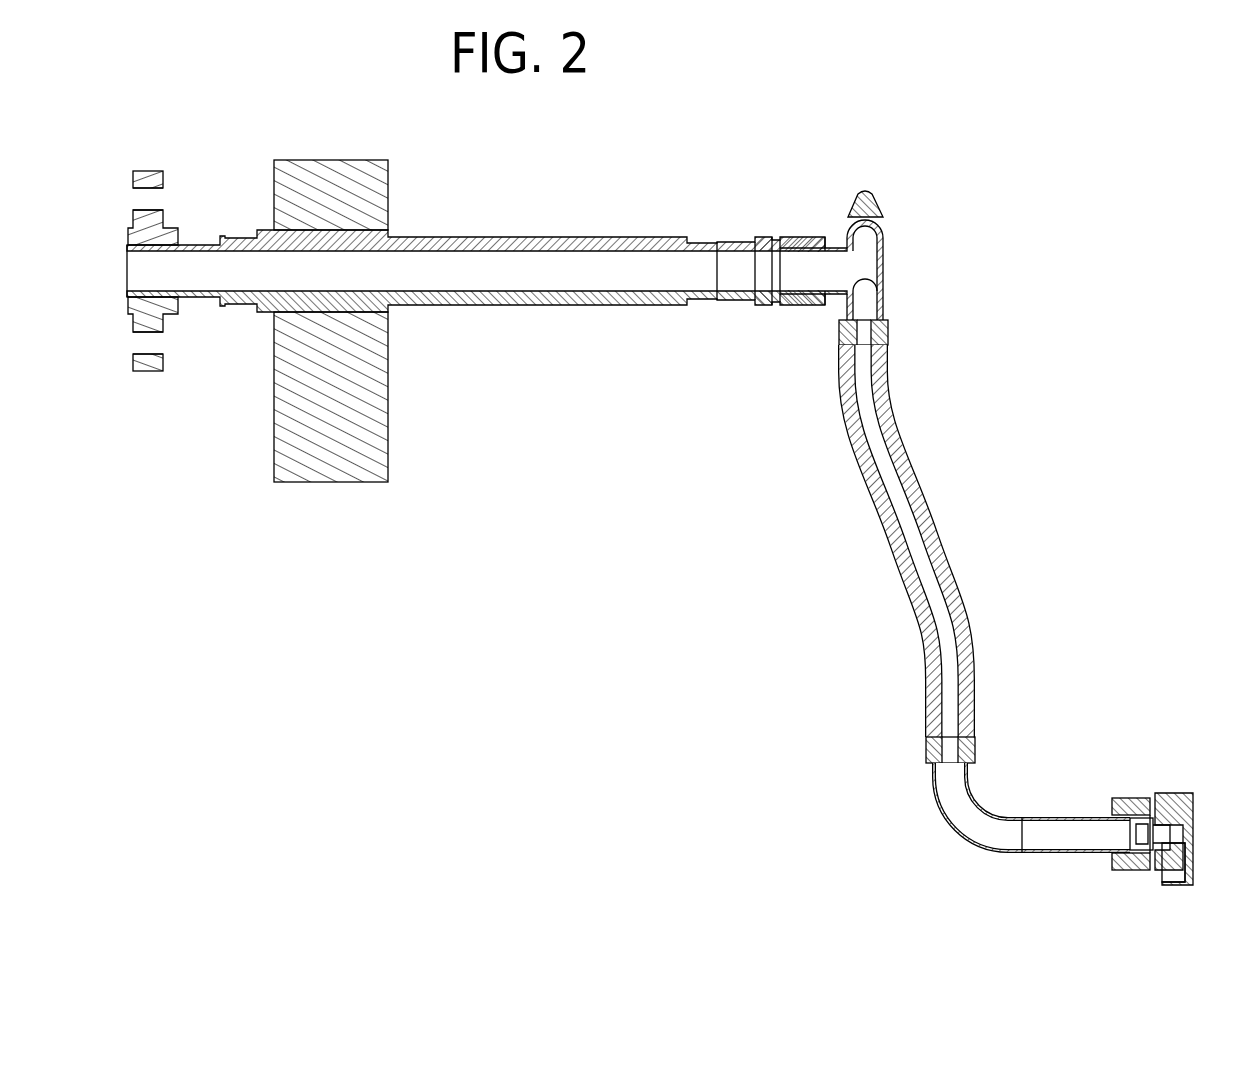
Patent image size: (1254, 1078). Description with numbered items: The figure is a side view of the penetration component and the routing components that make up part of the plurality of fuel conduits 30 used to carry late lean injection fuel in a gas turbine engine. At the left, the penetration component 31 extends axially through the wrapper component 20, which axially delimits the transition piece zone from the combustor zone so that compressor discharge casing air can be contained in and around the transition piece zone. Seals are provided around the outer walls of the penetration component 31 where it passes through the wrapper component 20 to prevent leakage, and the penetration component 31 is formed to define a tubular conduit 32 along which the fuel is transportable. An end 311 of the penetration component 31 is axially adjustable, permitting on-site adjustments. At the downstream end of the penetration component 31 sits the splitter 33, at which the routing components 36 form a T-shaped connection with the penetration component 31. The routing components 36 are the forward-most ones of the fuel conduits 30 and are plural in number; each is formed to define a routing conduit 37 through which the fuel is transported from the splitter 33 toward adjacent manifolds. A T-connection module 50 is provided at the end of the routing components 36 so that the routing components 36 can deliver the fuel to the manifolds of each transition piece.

The wrapper component 20 is at (382, 425).
The fuel conduits 30 is at (455, 237).
The penetration component 31 is at (125, 271).
The tubular conduit 32 is at (506, 278).
The end of the penetration component 311 is at (764, 238).
The splitter 33 is at (838, 218).
The routing components 36 is at (890, 395).
The routing conduits 37 is at (870, 379).
The T-connection module 50 is at (1127, 796).